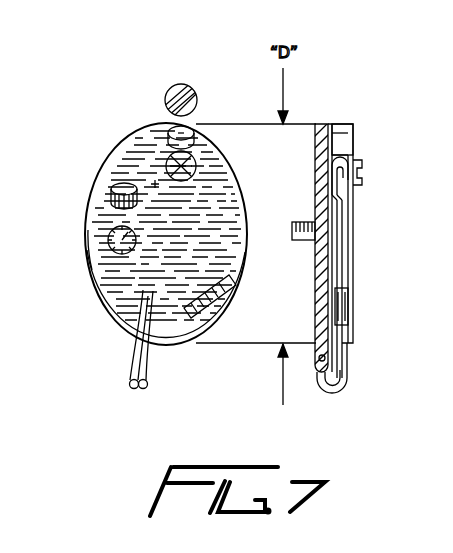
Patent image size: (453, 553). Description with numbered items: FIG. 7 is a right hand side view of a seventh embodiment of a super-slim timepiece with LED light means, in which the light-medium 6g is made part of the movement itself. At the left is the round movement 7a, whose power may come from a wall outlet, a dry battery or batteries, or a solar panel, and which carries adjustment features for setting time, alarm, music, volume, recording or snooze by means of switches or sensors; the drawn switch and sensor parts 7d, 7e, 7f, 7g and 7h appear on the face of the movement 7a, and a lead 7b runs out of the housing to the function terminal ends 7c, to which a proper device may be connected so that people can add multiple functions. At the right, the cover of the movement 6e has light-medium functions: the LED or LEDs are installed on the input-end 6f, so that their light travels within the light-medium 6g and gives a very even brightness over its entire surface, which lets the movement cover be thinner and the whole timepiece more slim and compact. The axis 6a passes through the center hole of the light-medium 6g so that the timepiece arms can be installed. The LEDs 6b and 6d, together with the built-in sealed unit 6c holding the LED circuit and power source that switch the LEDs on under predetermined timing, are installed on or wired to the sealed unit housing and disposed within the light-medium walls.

The round movement 7a is at (100, 300).
The tube 7b is at (130, 378).
The function terminal ends 7c is at (187, 333).
The button 7d is at (197, 172).
The button 7e is at (195, 131).
The screw 7f is at (168, 90).
The knob 7g is at (118, 182).
The dial 7h is at (110, 250).
The axis 6a is at (302, 240).
The LED 6b is at (330, 360).
The slider 6c is at (345, 302).
The LED 6d is at (354, 182).
The cover of the movement 6e is at (353, 153).
The input-end 6f is at (352, 128).
The light-medium 6g is at (320, 123).